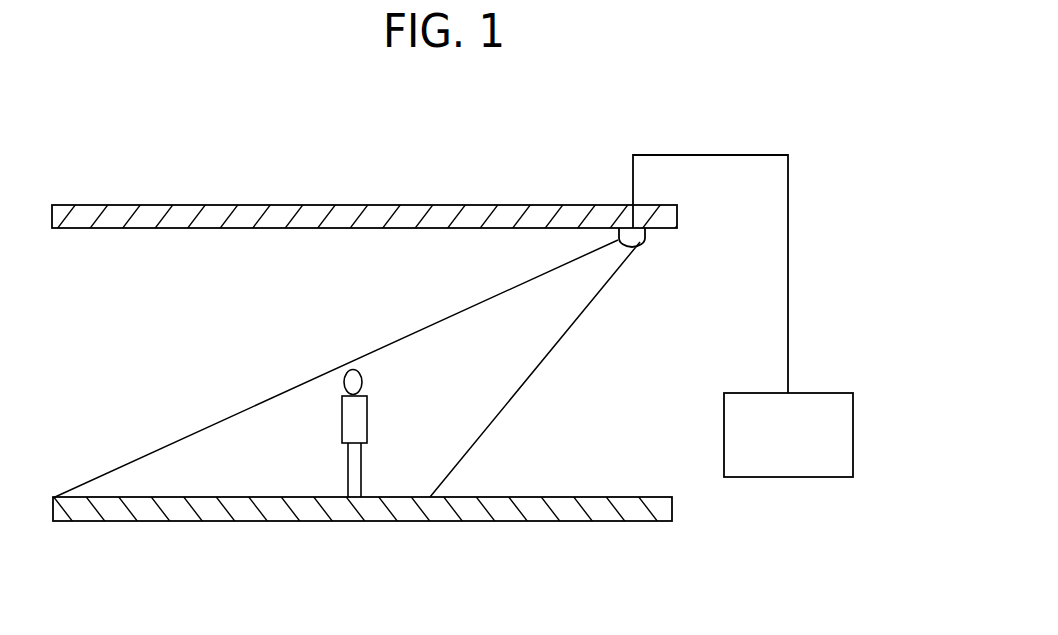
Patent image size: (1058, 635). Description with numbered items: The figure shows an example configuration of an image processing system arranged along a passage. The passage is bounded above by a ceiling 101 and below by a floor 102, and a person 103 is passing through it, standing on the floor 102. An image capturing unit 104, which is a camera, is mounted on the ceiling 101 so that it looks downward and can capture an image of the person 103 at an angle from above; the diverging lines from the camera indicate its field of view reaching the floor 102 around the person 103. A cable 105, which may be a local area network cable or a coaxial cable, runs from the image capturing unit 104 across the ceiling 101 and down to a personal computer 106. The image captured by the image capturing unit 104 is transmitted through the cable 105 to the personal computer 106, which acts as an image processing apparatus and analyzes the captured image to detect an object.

The ceiling 101 is at (187, 212).
The floor 102 is at (185, 515).
The person 103 is at (363, 414).
The image capturing unit 104 is at (646, 233).
The cable 105 is at (788, 168).
The personal computer 106 is at (853, 410).